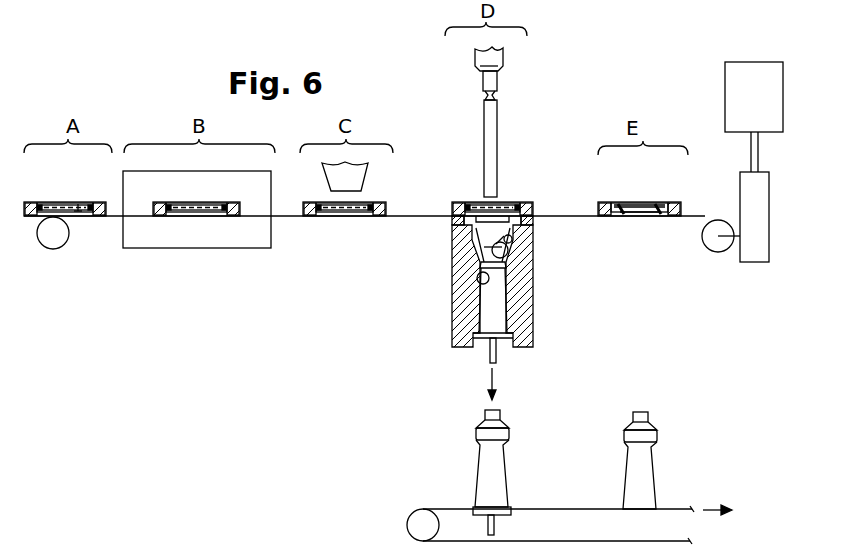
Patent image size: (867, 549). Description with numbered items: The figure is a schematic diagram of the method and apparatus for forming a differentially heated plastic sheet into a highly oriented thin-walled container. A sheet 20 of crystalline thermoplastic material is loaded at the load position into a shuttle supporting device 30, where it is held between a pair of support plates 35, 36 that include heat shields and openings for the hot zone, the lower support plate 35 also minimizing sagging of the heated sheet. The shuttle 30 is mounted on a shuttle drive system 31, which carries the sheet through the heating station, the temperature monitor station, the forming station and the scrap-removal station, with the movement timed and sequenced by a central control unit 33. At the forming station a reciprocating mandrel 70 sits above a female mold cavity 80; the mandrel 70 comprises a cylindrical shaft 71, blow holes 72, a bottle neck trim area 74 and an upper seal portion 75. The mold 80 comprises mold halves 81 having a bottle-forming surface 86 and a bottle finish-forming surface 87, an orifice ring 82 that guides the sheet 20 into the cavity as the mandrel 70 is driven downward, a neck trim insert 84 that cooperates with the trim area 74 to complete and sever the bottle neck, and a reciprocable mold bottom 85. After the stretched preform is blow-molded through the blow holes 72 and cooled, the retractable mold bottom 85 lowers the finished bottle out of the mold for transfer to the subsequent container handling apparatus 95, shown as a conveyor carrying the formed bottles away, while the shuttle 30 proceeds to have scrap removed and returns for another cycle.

The sheet of plastic material 20 is at (63, 206).
The shuttle supporting device 30 is at (69, 209).
The shuttle drive system 31 is at (46, 254).
The central control unit 33 is at (758, 188).
The support plate 35 is at (77, 210).
The support plate 36 is at (78, 205).
The reciprocating mandrel 70 is at (498, 114).
The cylindrical shaft 71 is at (492, 160).
The blow holes 72 is at (496, 97).
The bottle neck trim area 74 is at (488, 69).
The upper seal portion 75 is at (482, 60).
The female mold cavity 80 is at (490, 289).
The mold halves 81 is at (458, 291).
The orifice ring 82 is at (453, 222).
The neck trim insert 84 is at (510, 238).
The reciprocable mold bottom 85 is at (497, 350).
The bottle-forming surface 86 is at (478, 277).
The bottle finish-forming surface 87 is at (507, 253).
The container handling apparatus 95 is at (416, 505).